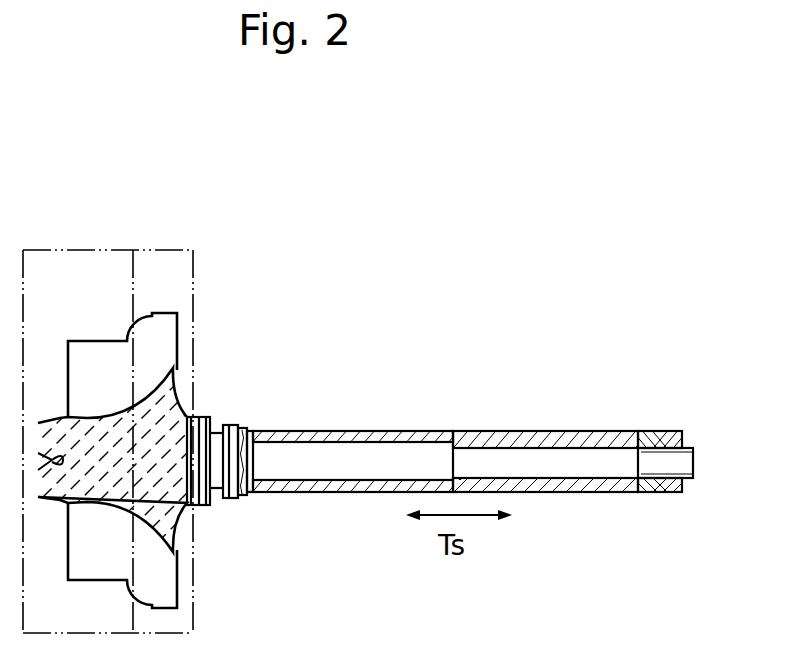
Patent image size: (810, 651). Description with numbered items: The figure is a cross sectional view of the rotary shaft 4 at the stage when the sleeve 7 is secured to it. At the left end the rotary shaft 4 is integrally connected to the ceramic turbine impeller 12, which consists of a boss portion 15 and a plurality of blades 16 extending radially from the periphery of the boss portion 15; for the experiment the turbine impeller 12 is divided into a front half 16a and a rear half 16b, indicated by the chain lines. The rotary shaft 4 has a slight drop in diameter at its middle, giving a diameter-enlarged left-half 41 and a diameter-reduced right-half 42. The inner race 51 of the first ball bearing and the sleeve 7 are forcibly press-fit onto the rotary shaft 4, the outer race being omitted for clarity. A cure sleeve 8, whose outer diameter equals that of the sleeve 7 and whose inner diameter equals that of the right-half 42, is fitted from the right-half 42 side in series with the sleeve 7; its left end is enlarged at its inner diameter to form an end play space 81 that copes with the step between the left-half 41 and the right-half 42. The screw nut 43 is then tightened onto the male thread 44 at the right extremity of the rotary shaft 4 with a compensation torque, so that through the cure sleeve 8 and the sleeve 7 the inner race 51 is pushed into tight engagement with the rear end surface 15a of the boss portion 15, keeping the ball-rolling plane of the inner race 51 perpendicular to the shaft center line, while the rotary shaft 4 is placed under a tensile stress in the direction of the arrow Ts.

The blades 16 is at (93, 357).
The front half 16a is at (47, 250).
The rear half 16b is at (173, 250).
The turbine impeller 12 is at (181, 381).
The boss portion 15 is at (160, 506).
The rear end surface 15a is at (252, 430).
The inner race 51 is at (266, 493).
The sleeve 7 is at (360, 493).
The diameter-enlarged left-half 41 is at (380, 443).
The end play space 81 is at (452, 431).
The diameter-reduced right-half 42 is at (522, 448).
The cure sleeve 8 is at (546, 493).
The male thread 44 is at (662, 431).
The screw nut 43 is at (660, 493).
The rotary shaft 4 is at (700, 461).